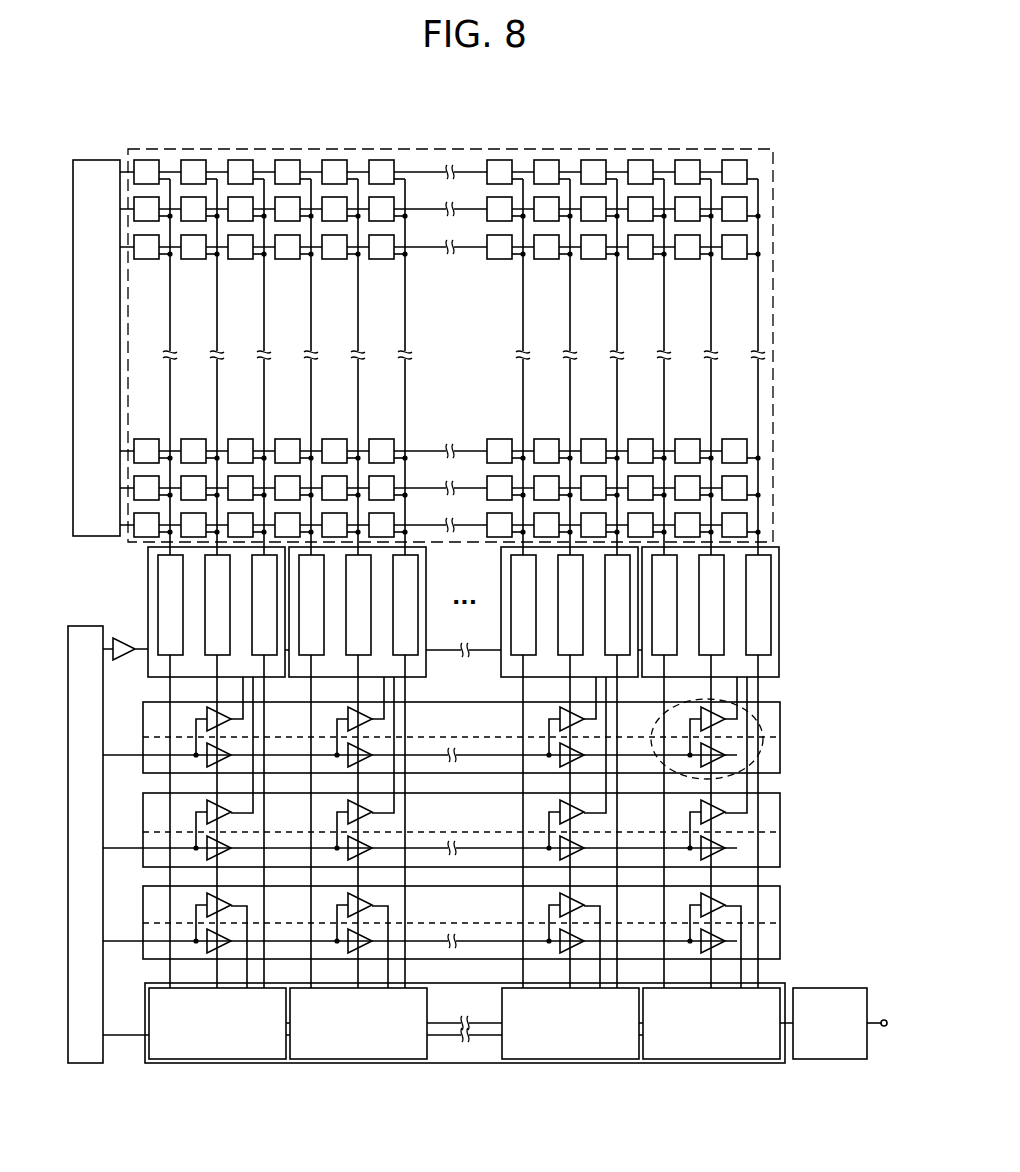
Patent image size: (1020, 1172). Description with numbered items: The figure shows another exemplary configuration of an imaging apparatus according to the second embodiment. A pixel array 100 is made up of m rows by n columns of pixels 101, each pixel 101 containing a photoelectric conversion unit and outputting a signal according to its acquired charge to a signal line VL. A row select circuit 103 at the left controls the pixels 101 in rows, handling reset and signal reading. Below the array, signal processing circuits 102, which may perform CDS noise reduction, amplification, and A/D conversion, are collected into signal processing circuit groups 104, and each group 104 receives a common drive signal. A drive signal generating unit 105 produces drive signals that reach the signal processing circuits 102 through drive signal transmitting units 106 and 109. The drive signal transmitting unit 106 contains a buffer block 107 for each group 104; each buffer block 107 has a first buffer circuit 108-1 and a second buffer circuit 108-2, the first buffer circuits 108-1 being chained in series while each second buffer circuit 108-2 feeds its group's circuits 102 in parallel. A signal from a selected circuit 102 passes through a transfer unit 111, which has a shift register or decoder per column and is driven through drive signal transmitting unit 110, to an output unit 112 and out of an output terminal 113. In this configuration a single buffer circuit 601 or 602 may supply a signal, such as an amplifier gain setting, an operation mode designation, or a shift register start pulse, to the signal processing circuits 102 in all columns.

The pixel array 100 is at (448, 149).
The pixel 101 is at (196, 159).
The signal line VL is at (173, 320).
The signal processing circuit 102 is at (157, 588).
The row select circuit 103 is at (92, 158).
The signal processing circuit group 104 is at (148, 566).
The drive signal generating unit 105 is at (78, 625).
The drive signal transmitting unit 106 is at (778, 699).
The buffer block 107 is at (735, 722).
The first buffer circuit 108-1 is at (755, 766).
The second buffer circuit 108-2 is at (745, 754).
The drive signal transmitting unit 109 is at (781, 820).
The drive signal transmitting unit 110 is at (781, 906).
The transfer unit 111 is at (738, 1064).
The output unit 112 is at (846, 1060).
The output terminal 113 is at (884, 1017).
The buffer circuit 601 is at (123, 638).
The buffer circuit 602 is at (122, 1040).